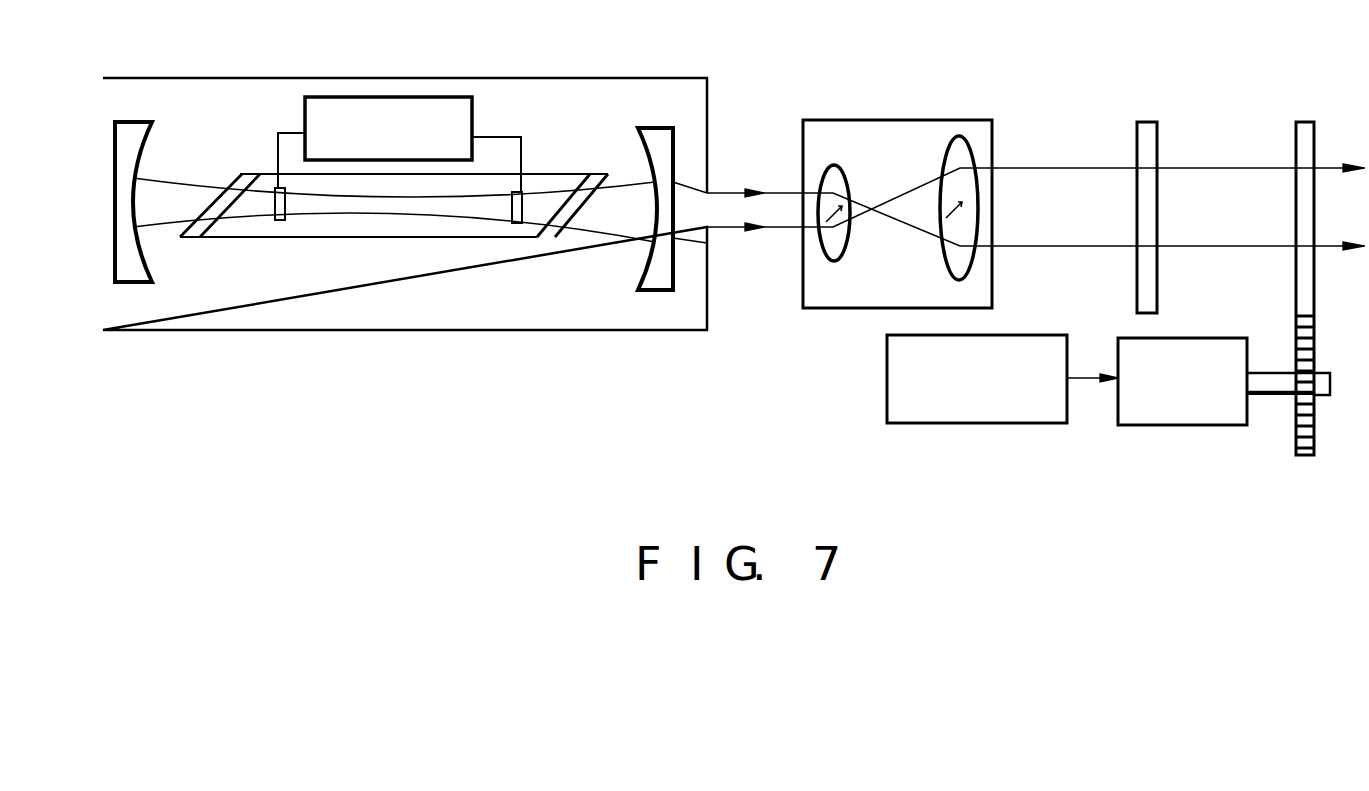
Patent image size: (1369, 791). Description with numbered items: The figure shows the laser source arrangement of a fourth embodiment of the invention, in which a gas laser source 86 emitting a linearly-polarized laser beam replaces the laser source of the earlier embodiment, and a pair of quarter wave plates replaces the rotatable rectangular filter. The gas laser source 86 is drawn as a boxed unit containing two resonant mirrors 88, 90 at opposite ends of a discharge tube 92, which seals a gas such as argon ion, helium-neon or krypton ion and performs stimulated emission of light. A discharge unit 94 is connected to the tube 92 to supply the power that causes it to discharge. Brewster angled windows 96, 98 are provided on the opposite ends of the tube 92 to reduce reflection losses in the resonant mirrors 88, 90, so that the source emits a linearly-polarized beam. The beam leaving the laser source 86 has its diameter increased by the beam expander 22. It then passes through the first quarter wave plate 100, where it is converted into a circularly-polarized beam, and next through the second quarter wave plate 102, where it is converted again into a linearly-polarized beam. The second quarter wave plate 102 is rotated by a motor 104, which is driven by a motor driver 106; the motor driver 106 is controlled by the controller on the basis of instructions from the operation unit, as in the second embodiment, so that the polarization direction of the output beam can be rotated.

The laser source 86 is at (493, 70).
The resonant mirror 88 is at (150, 270).
The resonant mirror 90 is at (645, 271).
The discharge tube 92 is at (398, 238).
The discharge unit 94 is at (472, 108).
The Brewster angled window 96 is at (233, 174).
The Brewster angled window 98 is at (568, 178).
The beam expander 22 is at (880, 120).
The first ¼ wave plate 100 is at (1147, 122).
The second ¼ wave plate 102 is at (1300, 122).
The motor 104 is at (1178, 338).
The motor driver 106 is at (1018, 335).